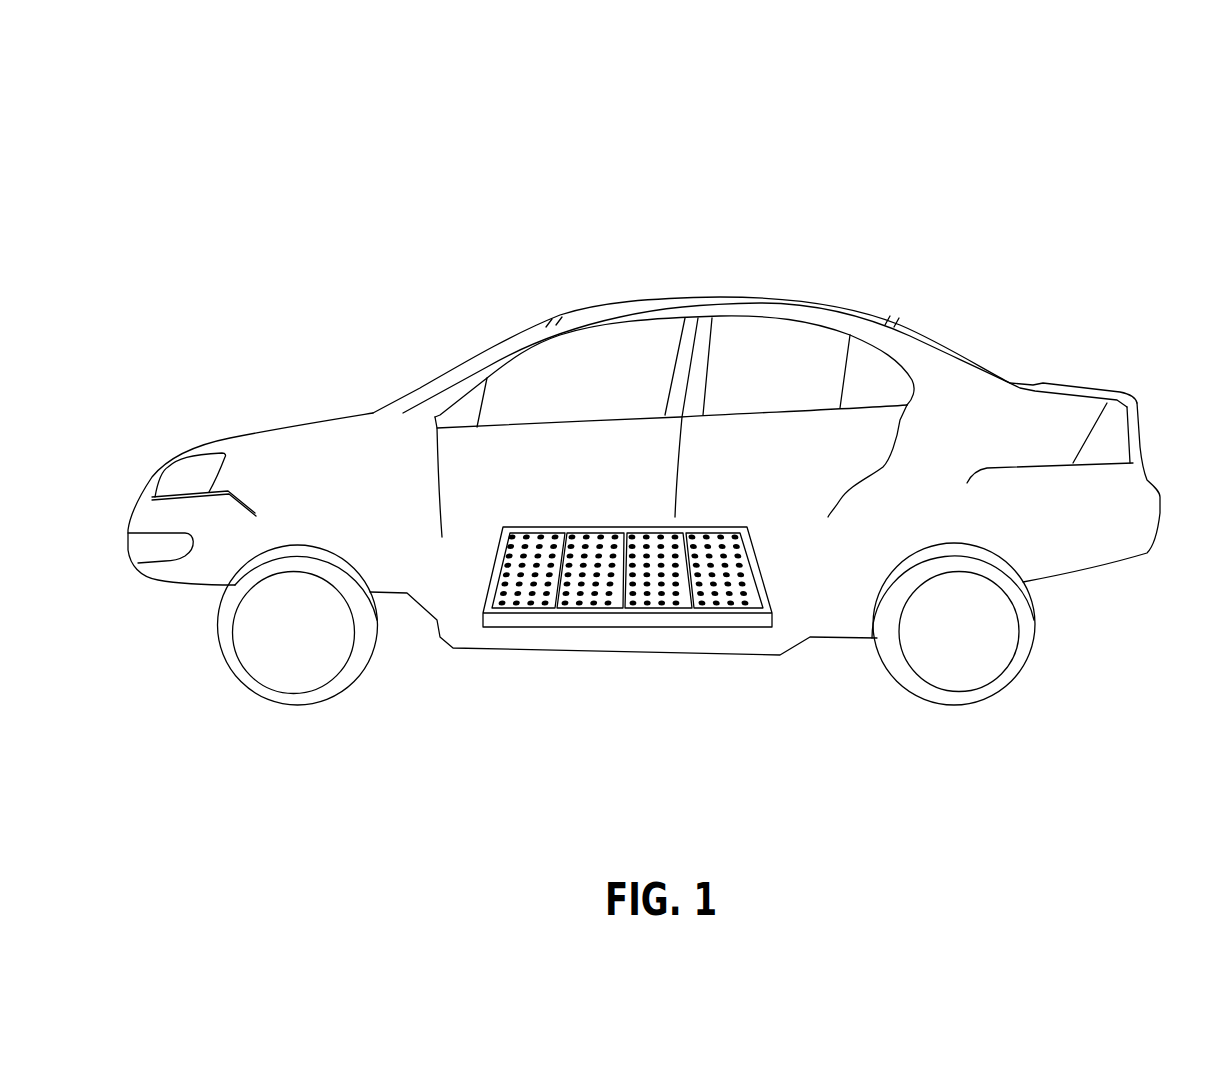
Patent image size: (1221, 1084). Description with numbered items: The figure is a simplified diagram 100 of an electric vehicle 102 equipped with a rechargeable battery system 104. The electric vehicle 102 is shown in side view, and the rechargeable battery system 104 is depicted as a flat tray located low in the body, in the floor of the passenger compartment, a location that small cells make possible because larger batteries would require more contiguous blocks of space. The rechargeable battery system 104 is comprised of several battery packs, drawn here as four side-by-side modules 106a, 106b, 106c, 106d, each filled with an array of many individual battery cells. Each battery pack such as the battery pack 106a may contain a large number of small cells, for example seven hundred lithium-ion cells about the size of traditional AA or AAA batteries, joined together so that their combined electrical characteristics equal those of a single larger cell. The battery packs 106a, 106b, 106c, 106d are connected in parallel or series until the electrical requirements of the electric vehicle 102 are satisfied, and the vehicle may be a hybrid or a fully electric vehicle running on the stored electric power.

The simplified diagram 100 is at (1152, 172).
The electric vehicle 102 is at (707, 298).
The rechargeable battery system 104 is at (628, 628).
The battery pack 106a is at (519, 533).
The battery pack 106b is at (588, 533).
The battery pack 106c is at (674, 533).
The battery pack 106d is at (749, 530).